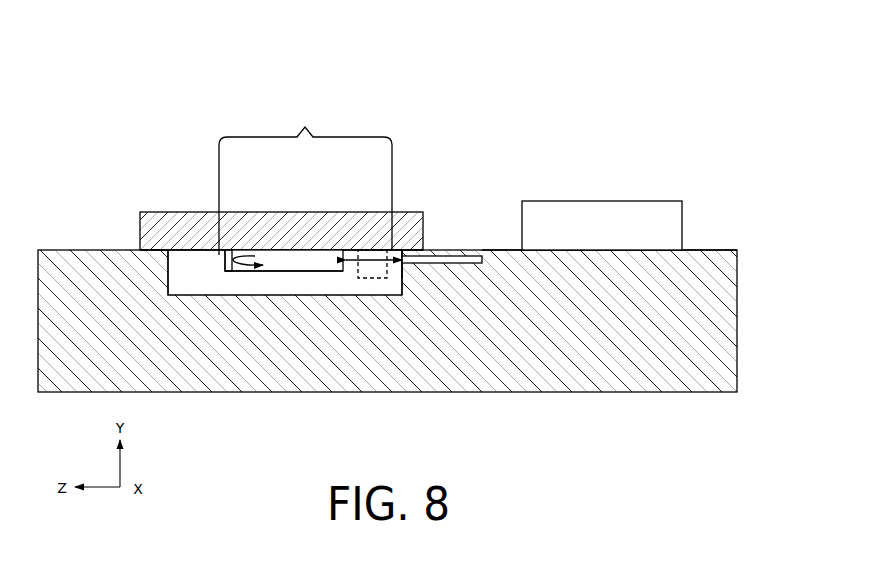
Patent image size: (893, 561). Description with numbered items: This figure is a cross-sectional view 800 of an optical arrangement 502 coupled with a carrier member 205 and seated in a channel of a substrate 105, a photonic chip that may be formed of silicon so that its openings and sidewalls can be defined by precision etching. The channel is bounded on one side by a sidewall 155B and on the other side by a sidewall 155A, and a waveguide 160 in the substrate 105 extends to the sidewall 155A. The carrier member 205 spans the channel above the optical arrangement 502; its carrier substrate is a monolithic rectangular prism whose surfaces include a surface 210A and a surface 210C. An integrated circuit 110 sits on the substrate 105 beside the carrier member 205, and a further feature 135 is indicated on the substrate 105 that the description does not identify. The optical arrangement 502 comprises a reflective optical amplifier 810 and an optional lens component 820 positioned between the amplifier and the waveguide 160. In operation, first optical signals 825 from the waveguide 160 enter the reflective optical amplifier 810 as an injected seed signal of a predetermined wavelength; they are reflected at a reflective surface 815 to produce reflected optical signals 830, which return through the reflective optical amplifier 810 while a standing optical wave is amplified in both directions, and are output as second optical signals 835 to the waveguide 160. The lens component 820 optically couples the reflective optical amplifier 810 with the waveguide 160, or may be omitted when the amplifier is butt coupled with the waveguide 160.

The cross-sectional view 800 is at (398, 246).
The substrate 105 is at (632, 392).
The substrate top surface 135 is at (703, 248).
The integrated circuit 110 is at (582, 237).
The carrier member 205 is at (321, 212).
The surface 210A is at (198, 250).
The surface 210C is at (408, 212).
The optical arrangement 502 is at (305, 177).
The reflective optical amplifier 810 is at (288, 260).
The reflective surface 815 is at (229, 250).
The reflected optical signals 830 is at (248, 271).
The lens component 820 is at (376, 250).
The first optical signals 825 is at (347, 262).
The second optical signals 835 is at (394, 250).
The waveguide 160 is at (463, 265).
The sidewall 155A is at (402, 278).
The sidewall 155B is at (168, 278).